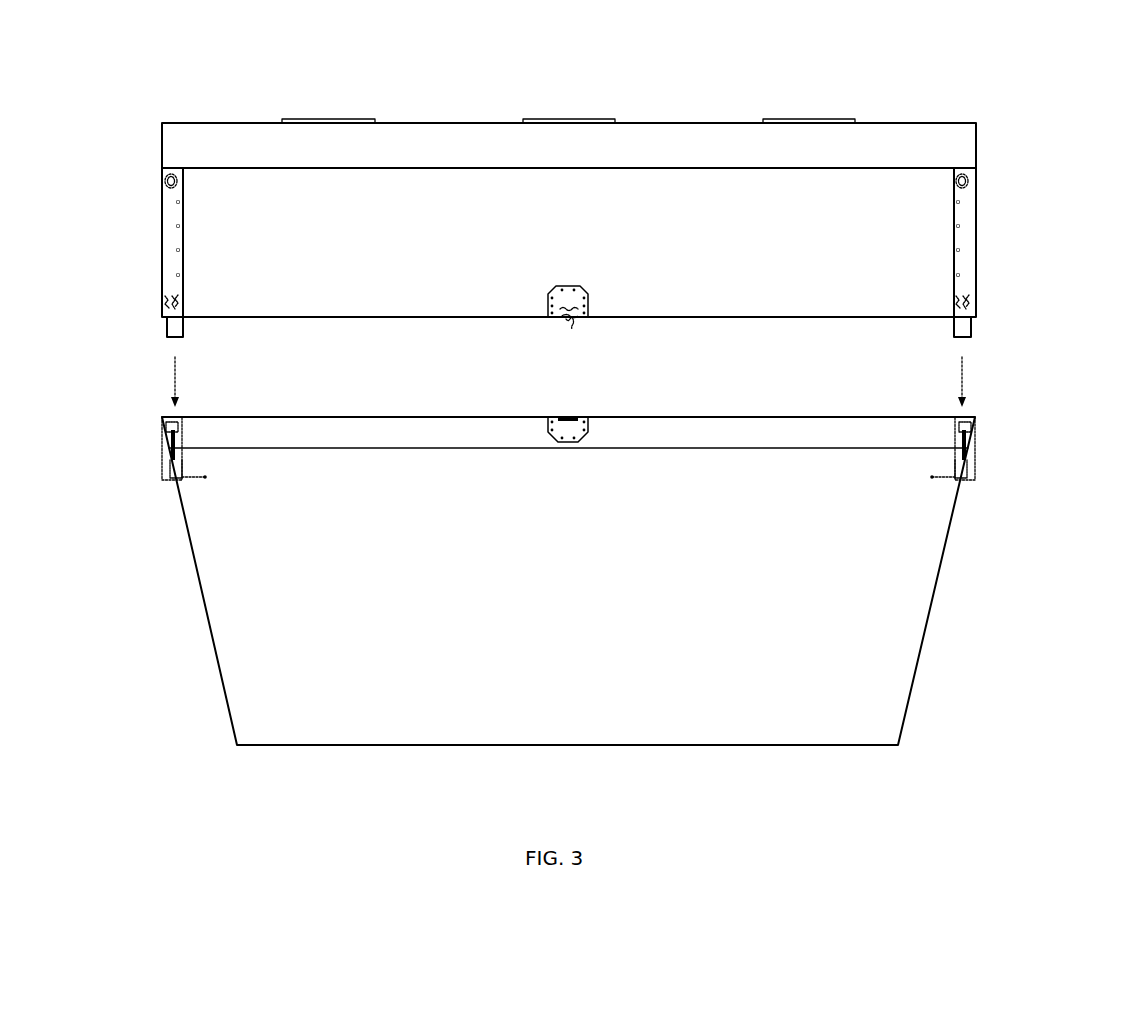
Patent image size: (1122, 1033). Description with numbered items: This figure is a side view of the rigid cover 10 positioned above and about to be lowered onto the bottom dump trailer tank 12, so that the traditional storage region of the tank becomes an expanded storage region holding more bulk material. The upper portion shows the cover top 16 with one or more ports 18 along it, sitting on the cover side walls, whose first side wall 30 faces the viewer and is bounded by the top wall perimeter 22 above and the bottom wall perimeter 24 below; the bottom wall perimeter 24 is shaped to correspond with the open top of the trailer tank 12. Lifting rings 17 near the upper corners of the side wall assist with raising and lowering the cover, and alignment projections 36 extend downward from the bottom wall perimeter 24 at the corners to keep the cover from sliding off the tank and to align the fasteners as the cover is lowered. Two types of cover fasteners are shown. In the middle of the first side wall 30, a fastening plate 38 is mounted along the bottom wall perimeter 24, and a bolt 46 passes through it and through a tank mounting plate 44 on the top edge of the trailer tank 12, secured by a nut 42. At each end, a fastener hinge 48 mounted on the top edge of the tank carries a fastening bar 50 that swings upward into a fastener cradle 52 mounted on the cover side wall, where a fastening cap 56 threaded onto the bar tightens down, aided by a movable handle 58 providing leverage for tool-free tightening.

The rigid cover 10 is at (446, 68).
The bottom dump trailer tank 12 is at (905, 666).
The cover top 16 is at (172, 153).
The lifting rings 17 is at (168, 183).
The ports 18 is at (577, 119).
The top wall perimeter 22 is at (678, 167).
The bottom wall perimeter 24 is at (800, 318).
The first side wall 30 is at (598, 222).
The alignment projections 36 is at (172, 333).
The fastening plate 38 is at (590, 292).
The nut 42 is at (566, 320).
The tank mounting plate 44 is at (575, 417).
The bolt 46 is at (568, 304).
The fastener hinge 48 is at (166, 418).
The fastening bar 50 is at (172, 442).
The fastener cradle 52 is at (176, 301).
The fastening cap 56 is at (170, 466).
The movable handle 58 is at (196, 480).